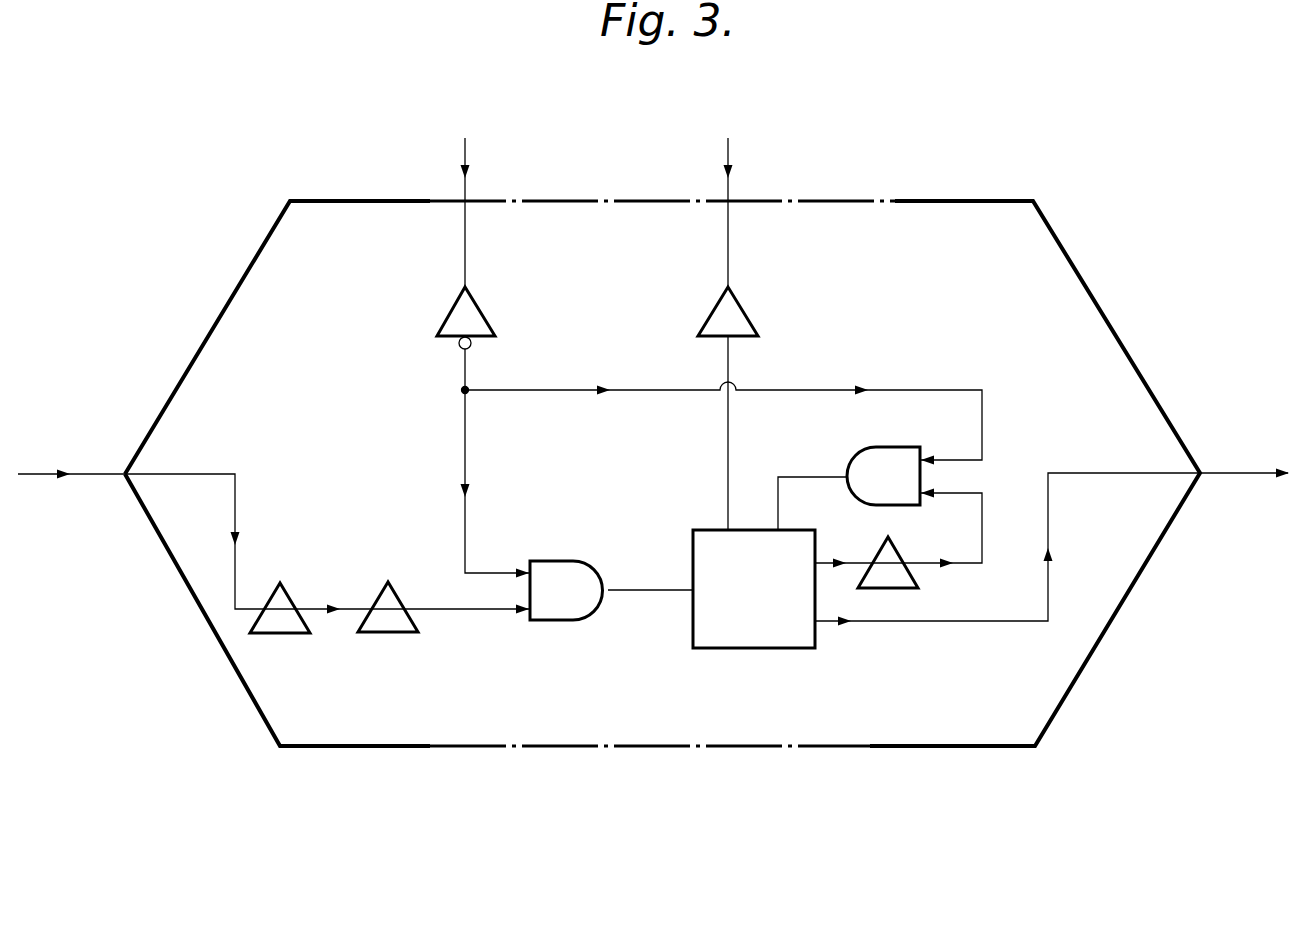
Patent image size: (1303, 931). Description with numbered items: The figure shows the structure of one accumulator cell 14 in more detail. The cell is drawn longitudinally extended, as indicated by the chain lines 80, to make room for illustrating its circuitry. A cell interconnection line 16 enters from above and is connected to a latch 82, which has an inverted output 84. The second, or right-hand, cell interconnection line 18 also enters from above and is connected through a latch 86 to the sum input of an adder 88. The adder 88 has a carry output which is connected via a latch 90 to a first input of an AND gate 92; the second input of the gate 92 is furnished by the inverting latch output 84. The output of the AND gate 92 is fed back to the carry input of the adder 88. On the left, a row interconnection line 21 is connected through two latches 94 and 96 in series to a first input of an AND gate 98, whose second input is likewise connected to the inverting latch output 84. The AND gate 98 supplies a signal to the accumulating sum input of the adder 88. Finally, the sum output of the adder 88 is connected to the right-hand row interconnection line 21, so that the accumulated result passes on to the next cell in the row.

The accumulator cell 14 is at (1097, 279).
The cell interconnection line 16 is at (468, 153).
The second cell interconnection line 18 is at (726, 156).
The row interconnection line 21 is at (57, 472).
The chain lines 80 is at (855, 200).
The latch 82 is at (475, 317).
The inverted output 84 is at (457, 346).
The latch 86 is at (733, 315).
The adder 88 is at (722, 637).
The latch 90 is at (888, 562).
The AND gate 92 is at (862, 465).
The latch 94 is at (282, 617).
The latch 96 is at (388, 618).
The AND gate 98 is at (552, 607).